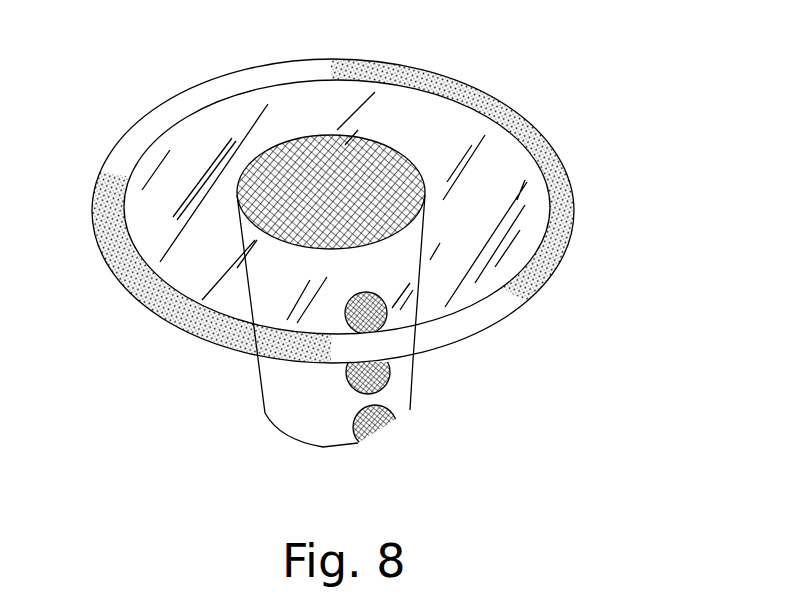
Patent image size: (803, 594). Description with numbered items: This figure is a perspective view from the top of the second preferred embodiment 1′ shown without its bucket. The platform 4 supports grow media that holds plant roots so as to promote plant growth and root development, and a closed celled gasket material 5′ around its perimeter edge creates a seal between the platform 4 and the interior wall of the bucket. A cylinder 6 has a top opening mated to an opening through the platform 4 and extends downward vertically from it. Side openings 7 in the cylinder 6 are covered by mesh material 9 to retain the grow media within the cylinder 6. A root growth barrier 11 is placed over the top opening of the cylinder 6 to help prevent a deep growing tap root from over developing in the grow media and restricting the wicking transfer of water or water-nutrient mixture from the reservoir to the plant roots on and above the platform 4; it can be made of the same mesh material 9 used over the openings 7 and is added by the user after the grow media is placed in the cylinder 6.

The second preferred embodiment 1′ is at (324, 255).
The platform 4 is at (148, 213).
The closed celled gasket material 5′ is at (500, 120).
The cylinder 6 is at (362, 259).
The openings 7 is at (400, 413).
The mesh material 9 is at (387, 437).
The root growth barrier 11 is at (362, 150).